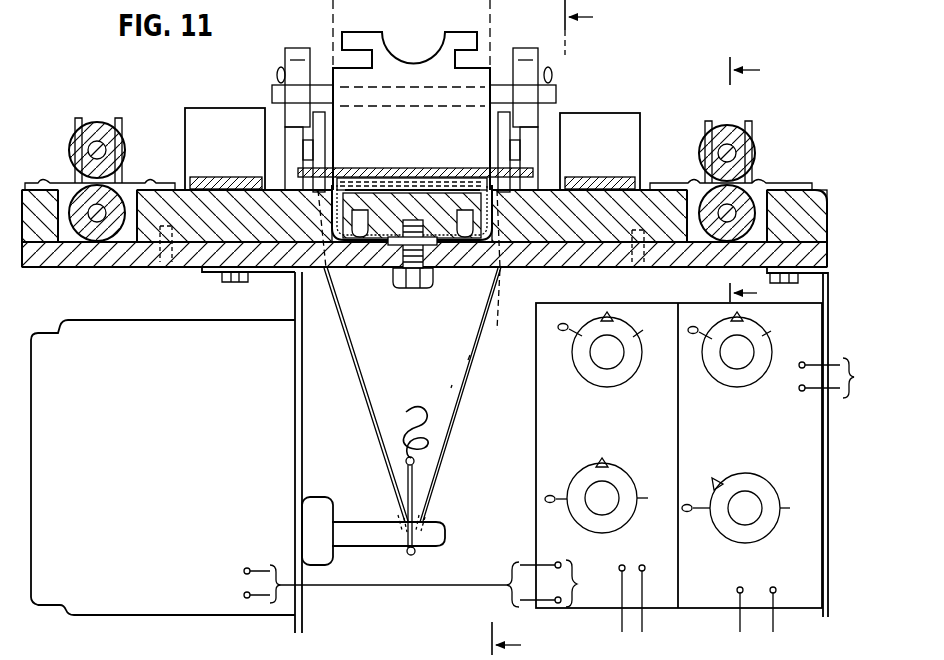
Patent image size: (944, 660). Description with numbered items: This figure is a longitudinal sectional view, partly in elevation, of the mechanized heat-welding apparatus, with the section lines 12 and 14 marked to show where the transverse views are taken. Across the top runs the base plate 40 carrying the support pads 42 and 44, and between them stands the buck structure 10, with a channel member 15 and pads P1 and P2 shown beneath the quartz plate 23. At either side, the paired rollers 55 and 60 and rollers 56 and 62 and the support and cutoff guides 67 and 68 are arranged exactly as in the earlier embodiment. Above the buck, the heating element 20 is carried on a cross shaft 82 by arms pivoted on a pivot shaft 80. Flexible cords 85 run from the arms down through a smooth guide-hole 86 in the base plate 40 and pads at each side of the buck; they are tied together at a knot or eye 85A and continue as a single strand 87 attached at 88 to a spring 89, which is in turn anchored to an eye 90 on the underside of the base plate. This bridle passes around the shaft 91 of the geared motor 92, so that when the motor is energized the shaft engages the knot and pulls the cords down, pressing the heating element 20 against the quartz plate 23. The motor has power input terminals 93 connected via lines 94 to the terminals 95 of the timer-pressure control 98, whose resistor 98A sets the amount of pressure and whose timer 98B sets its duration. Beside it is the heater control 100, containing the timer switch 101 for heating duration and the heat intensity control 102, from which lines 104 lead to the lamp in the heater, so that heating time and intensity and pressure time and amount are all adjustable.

The buck structure 10 is at (392, 224).
The section line 12— 12 is at (554, 327).
The section line 14— 14 is at (758, 180).
The channel member 15 is at (416, 178).
The heating element 20 is at (463, 87).
The quartz plate 23 is at (430, 174).
The base plate 40 is at (816, 269).
The support pad 42 is at (226, 229).
The support pad 44 is at (818, 205).
The roller 55 is at (120, 148).
The roller 56 is at (742, 157).
The roller 60 is at (122, 188).
The roller 62 is at (742, 212).
The support and cutoff guide 67 is at (223, 174).
The support and cutoff guide 68 is at (604, 174).
The pivot shaft 80 is at (446, 374).
The cross shaft 82 is at (556, 99).
The flexible cord 85 is at (365, 397).
The knot (eye) 85A is at (416, 556).
The guide-hole 86 is at (411, 356).
The single strand 87 is at (414, 499).
The attachment point 88 is at (416, 462).
The spring 89 is at (408, 414).
The eye 90 is at (456, 337).
The motor shaft 91 is at (438, 526).
The geared motor 92 is at (196, 519).
The power input terminals 93 is at (243, 594).
The lines 94 is at (288, 157).
The terminals 95 is at (577, 585).
The timer-pressure control 98 is at (567, 379).
The resistor 98A is at (582, 507).
The timer 98B is at (632, 362).
The heater control 100 is at (796, 458).
The timer switch 101 is at (758, 364).
The heat intensity control 102 is at (760, 527).
The lines 104 is at (833, 391).
The pad P1 is at (385, 178).
The pad P2 is at (372, 178).